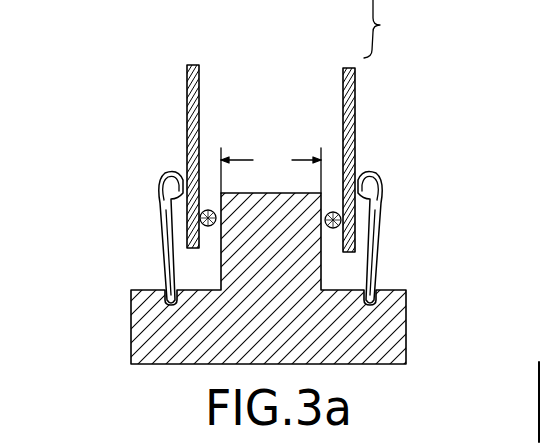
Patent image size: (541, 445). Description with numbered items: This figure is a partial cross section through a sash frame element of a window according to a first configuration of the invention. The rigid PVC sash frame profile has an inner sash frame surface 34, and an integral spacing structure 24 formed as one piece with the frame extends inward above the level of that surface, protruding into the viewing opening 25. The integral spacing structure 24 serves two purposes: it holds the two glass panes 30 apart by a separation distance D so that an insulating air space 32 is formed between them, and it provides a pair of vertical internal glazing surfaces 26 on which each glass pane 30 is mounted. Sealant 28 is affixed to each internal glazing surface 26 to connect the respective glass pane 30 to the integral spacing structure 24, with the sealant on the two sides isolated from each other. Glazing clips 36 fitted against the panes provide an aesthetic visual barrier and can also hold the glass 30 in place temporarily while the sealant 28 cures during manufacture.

The integral spacing structure 24 is at (378, 232).
The viewing opening 25 is at (388, 29).
The internal glazing surfaces 26 is at (220, 272).
The sealant 28 is at (181, 212).
The glass panes 30 is at (183, 97).
The insulating air space 32 is at (262, 63).
The inner sash frame surface 34 is at (147, 283).
The glazing clips 36 is at (160, 172).